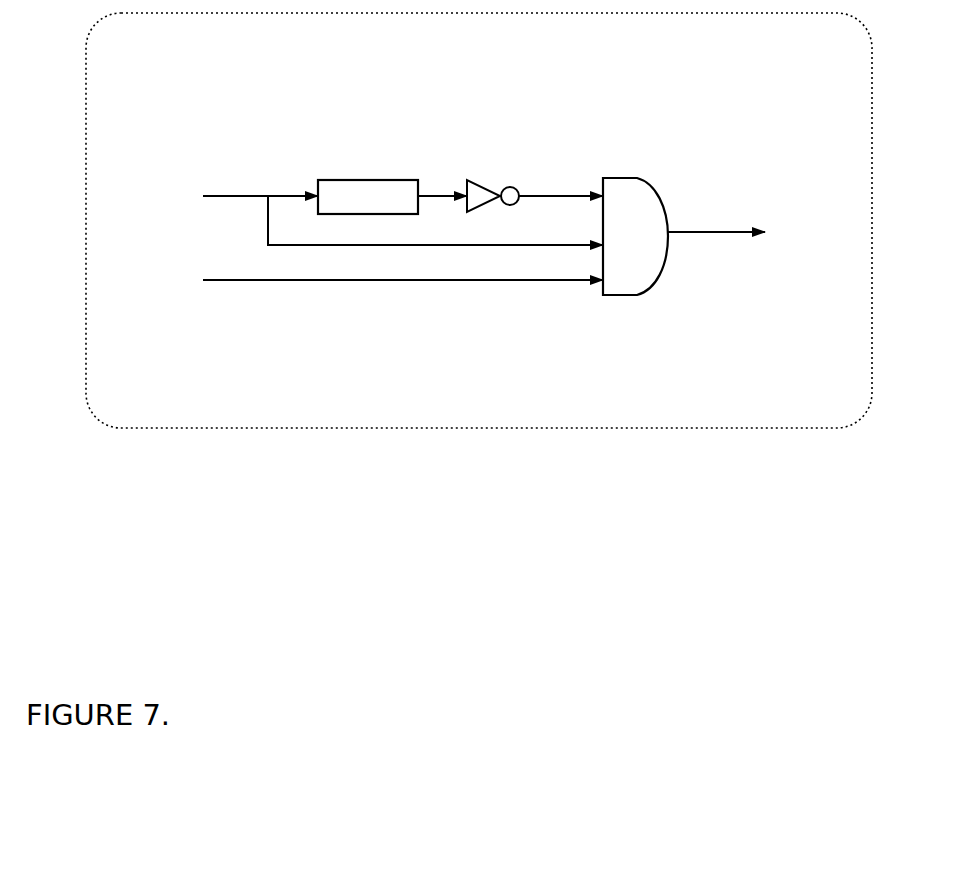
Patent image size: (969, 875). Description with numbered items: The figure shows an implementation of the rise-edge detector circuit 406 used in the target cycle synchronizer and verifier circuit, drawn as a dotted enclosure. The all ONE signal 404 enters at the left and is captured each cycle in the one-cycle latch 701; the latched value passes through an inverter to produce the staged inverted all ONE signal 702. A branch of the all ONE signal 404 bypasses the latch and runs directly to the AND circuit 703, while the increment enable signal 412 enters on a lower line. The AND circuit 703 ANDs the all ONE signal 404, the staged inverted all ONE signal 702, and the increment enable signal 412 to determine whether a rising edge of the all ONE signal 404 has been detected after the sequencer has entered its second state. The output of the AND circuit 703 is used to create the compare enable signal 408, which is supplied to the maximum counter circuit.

The all ONE signal 404 is at (262, 186).
The rise-edge detector circuit 406 is at (450, 437).
The compare enable signal 408 is at (723, 237).
The increment enable signal 412 is at (251, 288).
The one-cycle latch 701 is at (366, 177).
The staged inverted all ONE signal 702 is at (560, 187).
The AND circuit 703 is at (644, 177).